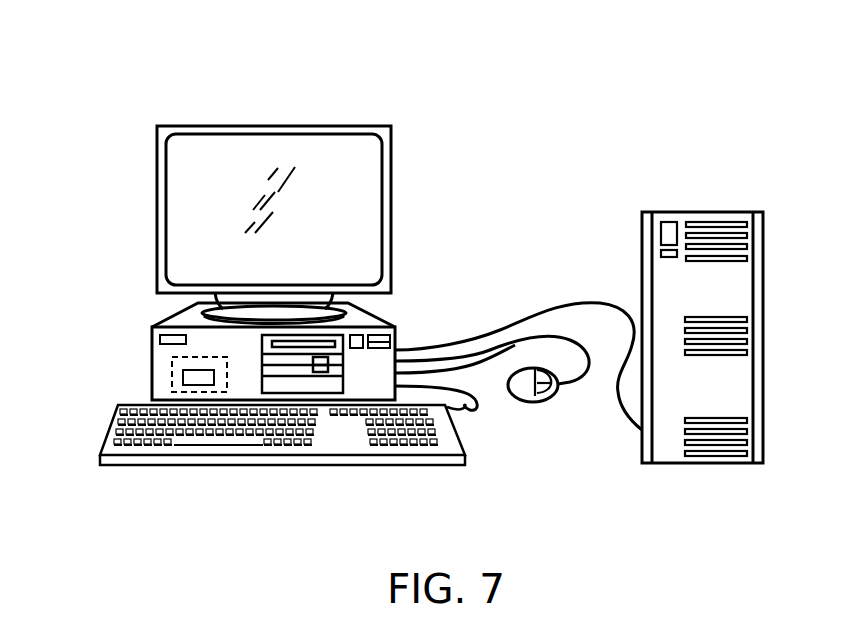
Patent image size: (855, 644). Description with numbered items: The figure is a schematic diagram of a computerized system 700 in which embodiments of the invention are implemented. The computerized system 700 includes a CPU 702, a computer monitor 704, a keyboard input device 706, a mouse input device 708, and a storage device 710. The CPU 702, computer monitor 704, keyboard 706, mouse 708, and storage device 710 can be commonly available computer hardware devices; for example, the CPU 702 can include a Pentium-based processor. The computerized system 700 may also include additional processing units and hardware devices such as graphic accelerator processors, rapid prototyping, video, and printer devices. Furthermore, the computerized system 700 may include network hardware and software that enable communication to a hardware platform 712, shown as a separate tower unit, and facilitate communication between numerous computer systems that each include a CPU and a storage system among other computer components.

The computerized system 700 is at (426, 95).
The CPU 702 is at (182, 375).
The computer monitor 704 is at (367, 195).
The keyboard input device 706 is at (110, 423).
The mouse input device 708 is at (535, 396).
The storage device 710 is at (340, 379).
The hardware platform 712 is at (697, 212).